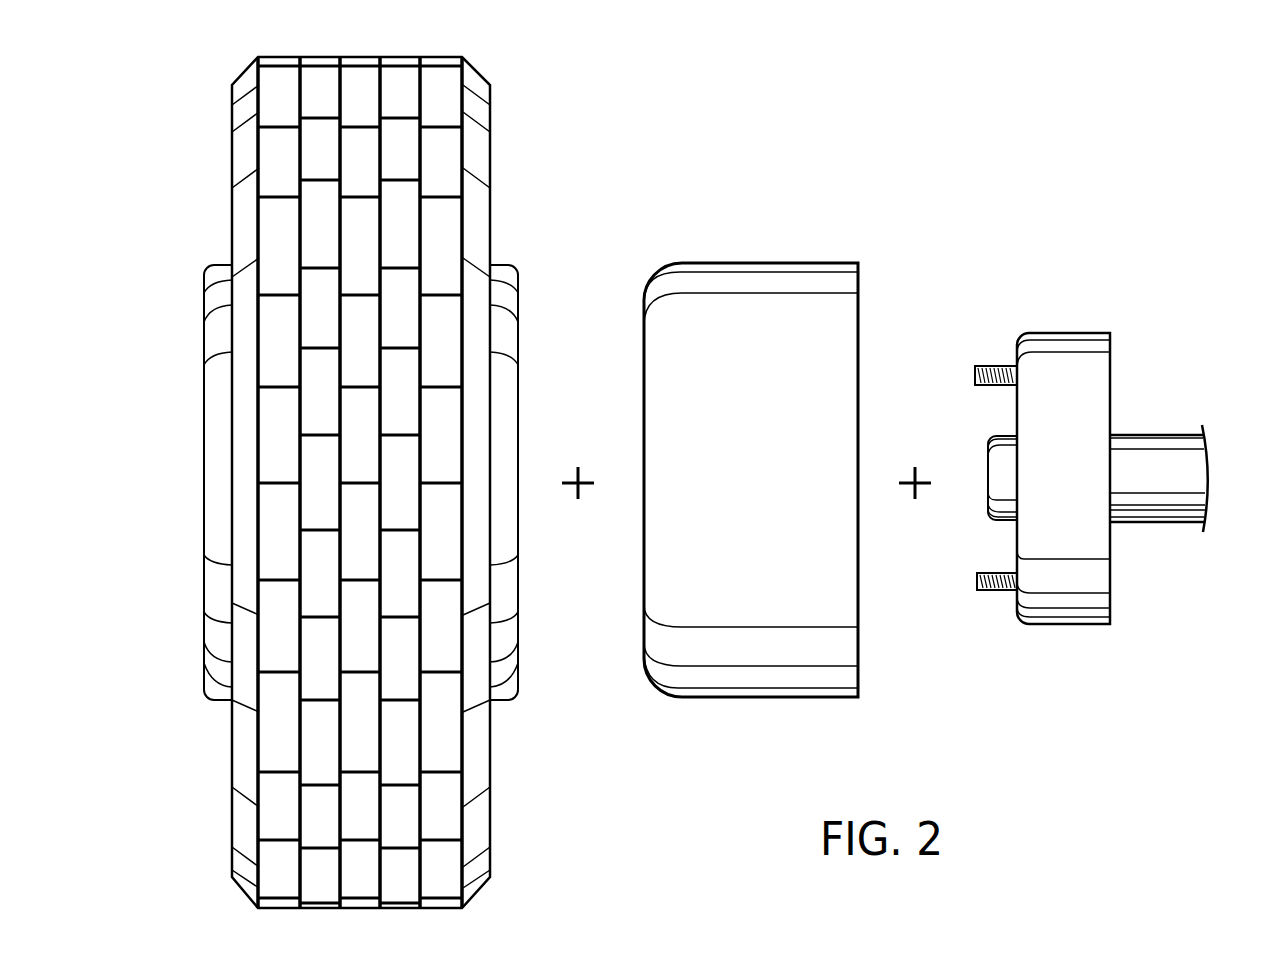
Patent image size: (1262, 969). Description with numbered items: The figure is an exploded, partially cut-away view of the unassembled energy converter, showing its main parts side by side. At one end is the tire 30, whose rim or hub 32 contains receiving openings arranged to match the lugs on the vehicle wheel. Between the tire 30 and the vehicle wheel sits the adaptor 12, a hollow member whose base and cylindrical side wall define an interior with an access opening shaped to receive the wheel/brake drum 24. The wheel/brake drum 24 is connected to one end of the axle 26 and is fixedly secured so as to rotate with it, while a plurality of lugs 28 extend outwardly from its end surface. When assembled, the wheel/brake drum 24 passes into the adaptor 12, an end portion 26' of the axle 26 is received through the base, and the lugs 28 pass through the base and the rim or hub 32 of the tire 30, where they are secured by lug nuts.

The adaptor 12 is at (755, 222).
The wheel/brake drum 24 is at (1067, 343).
The axle 26 is at (1175, 412).
The end portion of the axle 26' is at (959, 547).
The lugs 28 is at (995, 353).
The tire 30 is at (468, 735).
The rim or hub 32 is at (220, 292).